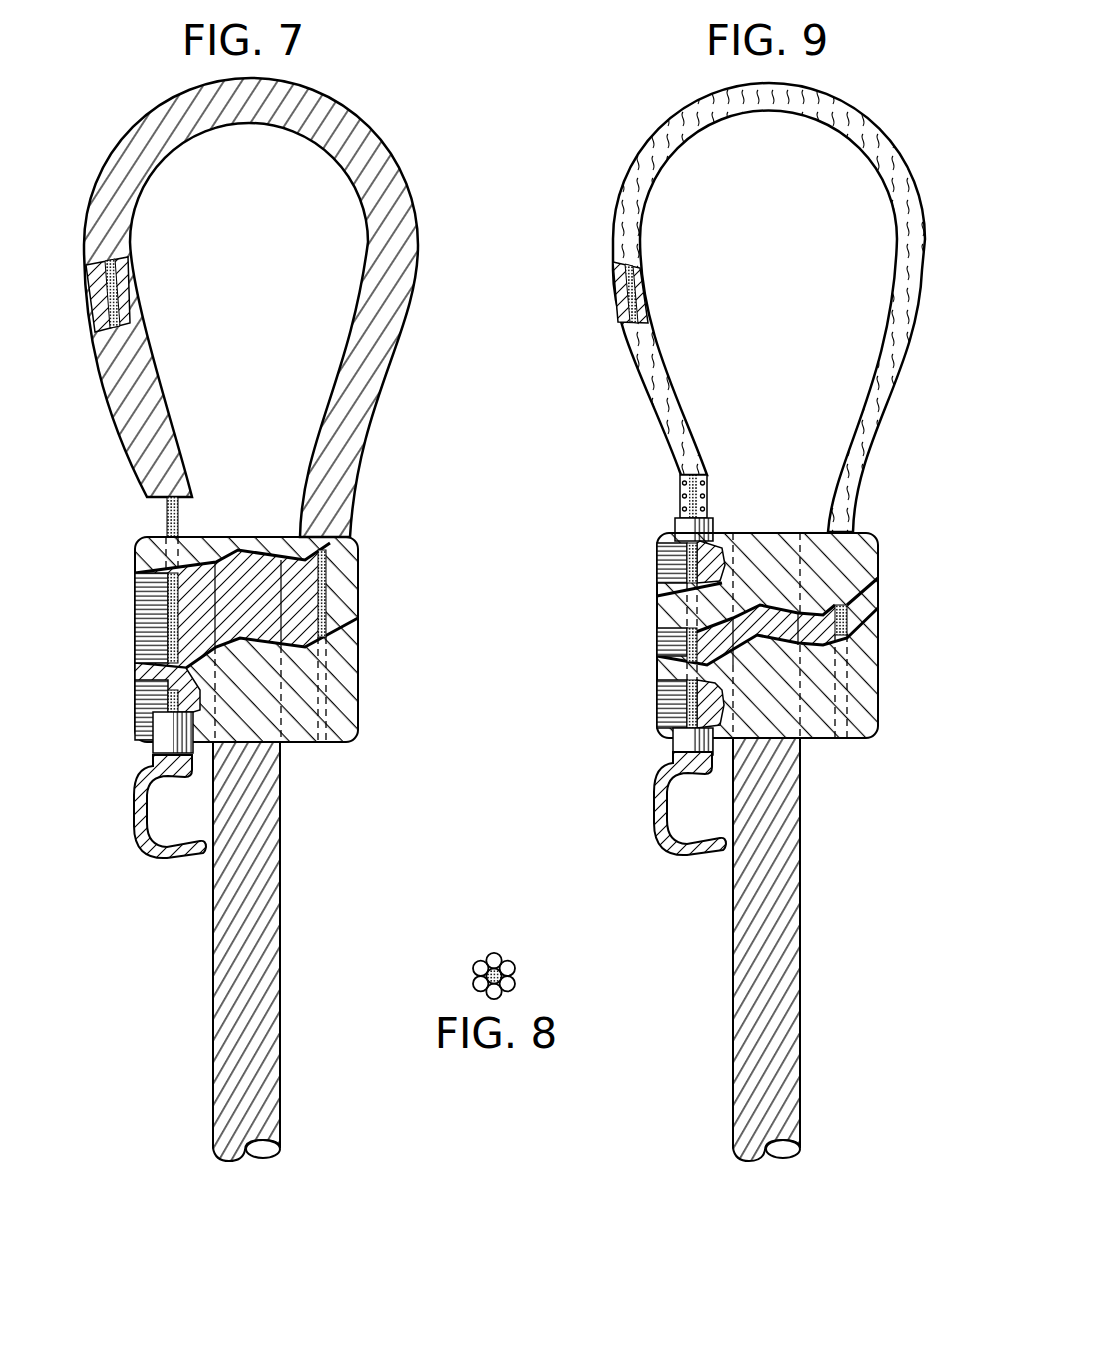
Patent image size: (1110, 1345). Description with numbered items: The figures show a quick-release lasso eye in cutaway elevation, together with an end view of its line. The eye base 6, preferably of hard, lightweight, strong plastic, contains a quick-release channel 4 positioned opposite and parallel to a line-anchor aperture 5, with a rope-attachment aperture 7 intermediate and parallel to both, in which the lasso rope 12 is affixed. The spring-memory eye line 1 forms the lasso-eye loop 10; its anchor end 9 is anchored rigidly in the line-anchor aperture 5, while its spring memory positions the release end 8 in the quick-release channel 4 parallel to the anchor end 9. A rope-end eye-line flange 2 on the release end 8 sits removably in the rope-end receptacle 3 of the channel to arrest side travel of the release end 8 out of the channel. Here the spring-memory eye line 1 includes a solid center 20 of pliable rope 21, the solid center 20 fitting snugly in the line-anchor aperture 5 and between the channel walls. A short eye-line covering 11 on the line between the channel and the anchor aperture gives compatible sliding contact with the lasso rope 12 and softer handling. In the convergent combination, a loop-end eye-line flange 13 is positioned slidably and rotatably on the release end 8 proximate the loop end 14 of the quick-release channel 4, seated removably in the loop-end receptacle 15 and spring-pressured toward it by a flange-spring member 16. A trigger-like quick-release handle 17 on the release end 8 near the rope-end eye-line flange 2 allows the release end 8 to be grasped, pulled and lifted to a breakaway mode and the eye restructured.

In FIG. 7, the spring-memory eye line 1 is at (135, 289).
In FIG. 9, the spring-memory eye line 1 is at (646, 284).
In FIG. 7, the rope-end eye-line flange 2 is at (163, 745).
In FIG. 9, the rope-end eye-line flange 2 is at (683, 745).
In FIG. 7, the rope-end receptacle 3 is at (147, 697).
In FIG. 9, the rope-end receptacle 3 is at (672, 714).
In FIG. 7, the quick-release channel 4 is at (147, 589).
In FIG. 9, the quick-release channel 4 is at (660, 640).
In FIG. 7, the line-anchor aperture 5 is at (290, 571).
In FIG. 9, the line-anchor aperture 5 is at (878, 587).
In FIG. 7, the eye base 6 is at (346, 537).
In FIG. 9, the eye base 6 is at (878, 533).
In FIG. 7, the rope-attachment aperture 7 is at (275, 697).
In FIG. 9, the rope-attachment aperture 7 is at (800, 691).
In FIG. 7, the release end 8 is at (165, 629).
In FIG. 9, the release end 8 is at (690, 662).
In FIG. 7, the anchor end 9 is at (330, 650).
In FIG. 9, the anchor end 9 is at (850, 642).
In FIG. 7, the lasso-eye loop 10 is at (430, 411).
In FIG. 9, the lasso-eye loop 10 is at (573, 411).
In FIG. 9, the eye-line covering 11 is at (627, 225).
In FIG. 7, the lasso rope 12 is at (245, 1098).
In FIG. 9, the lasso rope 12 is at (770, 1098).
In FIG. 9, the loop-end eye-line flange 13 is at (680, 528).
In FIG. 7, the loop end 14 is at (180, 535).
In FIG. 9, the loop end 14 is at (718, 532).
In FIG. 9, the loop-end receptacle 15 is at (677, 570).
In FIG. 9, the flange-spring member 16 is at (680, 492).
In FIG. 7, the quick-release handle 17 is at (180, 862).
In FIG. 9, the quick-release handle 17 is at (700, 852).
In FIG. 8, the solid center 20 is at (505, 970).
In FIG. 7, the pliable rope 21 is at (107, 212).
In FIG. 8, the pliable rope 21 is at (497, 969).